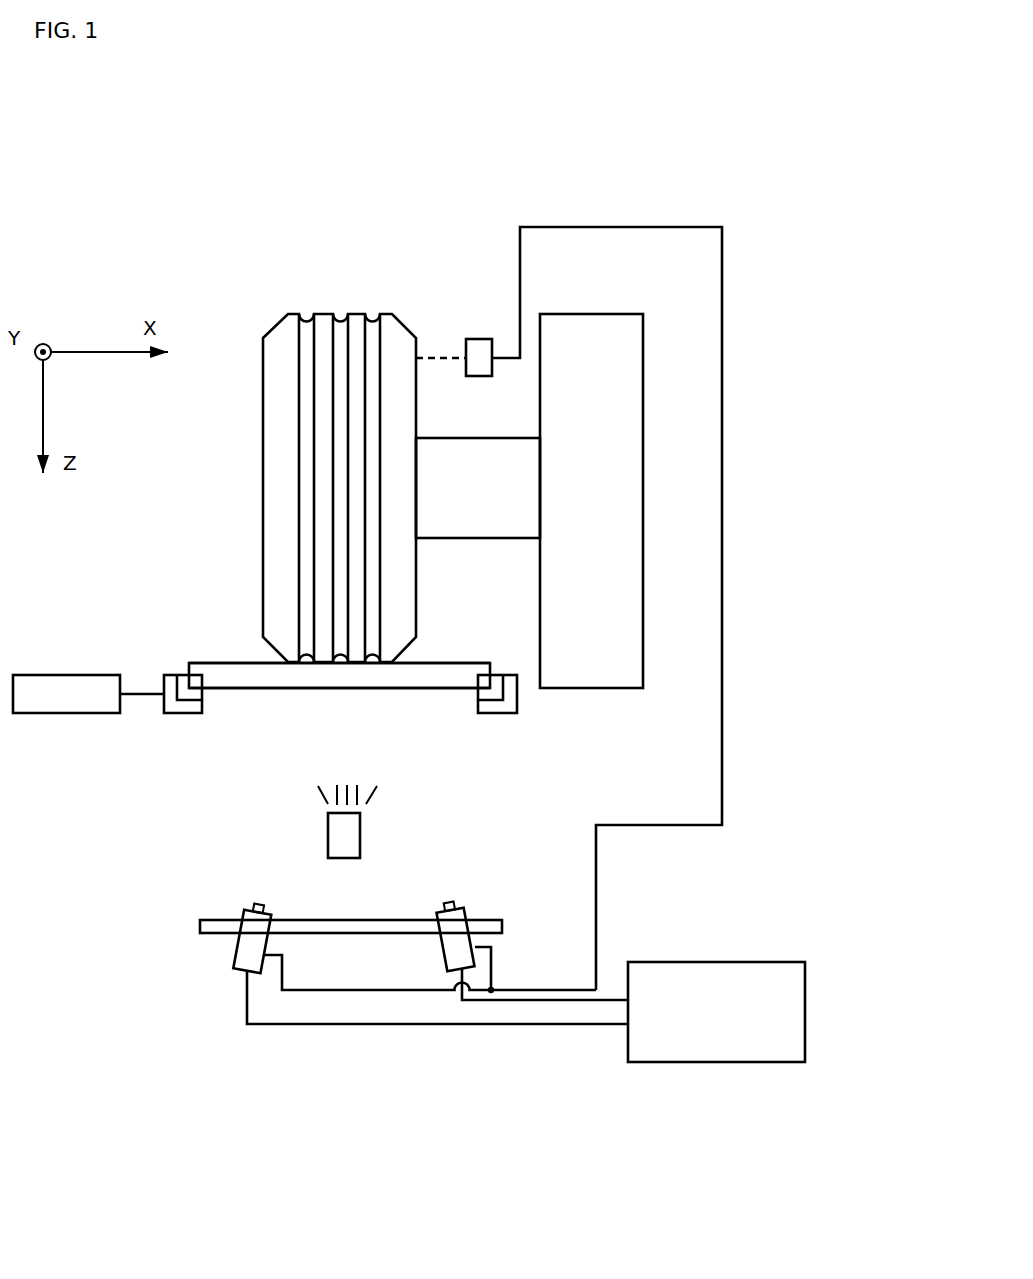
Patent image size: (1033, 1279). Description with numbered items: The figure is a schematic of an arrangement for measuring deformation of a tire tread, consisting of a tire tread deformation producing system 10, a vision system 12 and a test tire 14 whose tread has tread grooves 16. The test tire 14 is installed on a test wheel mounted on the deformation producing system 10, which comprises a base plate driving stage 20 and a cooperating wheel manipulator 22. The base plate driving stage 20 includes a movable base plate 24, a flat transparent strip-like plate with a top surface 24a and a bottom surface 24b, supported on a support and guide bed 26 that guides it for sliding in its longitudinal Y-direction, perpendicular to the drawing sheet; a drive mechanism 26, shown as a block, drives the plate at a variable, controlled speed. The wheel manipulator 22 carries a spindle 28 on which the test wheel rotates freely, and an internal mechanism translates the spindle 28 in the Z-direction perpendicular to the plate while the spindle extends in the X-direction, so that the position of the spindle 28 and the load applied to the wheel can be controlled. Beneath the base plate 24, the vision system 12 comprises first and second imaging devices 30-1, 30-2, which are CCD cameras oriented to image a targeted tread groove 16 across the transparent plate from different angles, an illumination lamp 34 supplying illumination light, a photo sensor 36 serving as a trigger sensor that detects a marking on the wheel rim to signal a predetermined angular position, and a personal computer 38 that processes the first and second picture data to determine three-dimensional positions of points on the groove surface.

The tire tread deformation producing system 10 is at (210, 253).
The vision system 12 is at (352, 1052).
The test tire 14 is at (282, 455).
The tread grooves 16 is at (341, 314).
The base plate driving stage 20 is at (145, 738).
The wheel manipulator 22 is at (600, 303).
The movable base plate 24 is at (212, 660).
The top surface 24a is at (257, 662).
The bottom surface 24b is at (252, 690).
The support and guide bed 26 is at (67, 675).
The spindle 28 is at (487, 438).
The first imaging device 30-1 is at (247, 913).
The second imaging device 30-2 is at (467, 915).
The illumination lamp 34 is at (360, 833).
The photo sensor 36 is at (482, 338).
The personal computer 38 is at (715, 962).